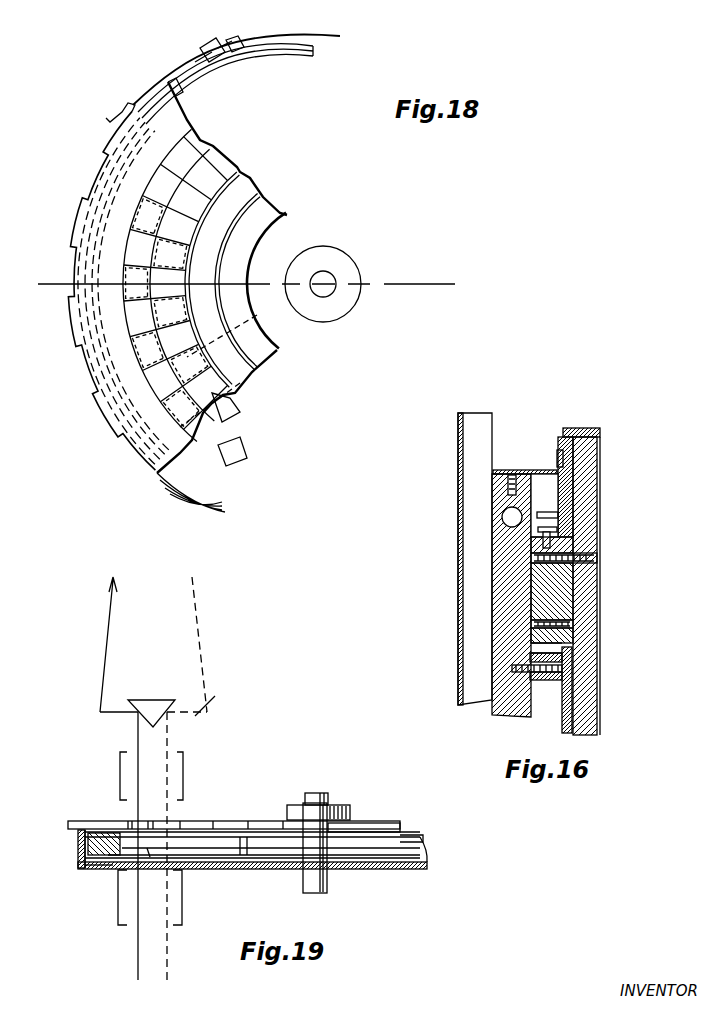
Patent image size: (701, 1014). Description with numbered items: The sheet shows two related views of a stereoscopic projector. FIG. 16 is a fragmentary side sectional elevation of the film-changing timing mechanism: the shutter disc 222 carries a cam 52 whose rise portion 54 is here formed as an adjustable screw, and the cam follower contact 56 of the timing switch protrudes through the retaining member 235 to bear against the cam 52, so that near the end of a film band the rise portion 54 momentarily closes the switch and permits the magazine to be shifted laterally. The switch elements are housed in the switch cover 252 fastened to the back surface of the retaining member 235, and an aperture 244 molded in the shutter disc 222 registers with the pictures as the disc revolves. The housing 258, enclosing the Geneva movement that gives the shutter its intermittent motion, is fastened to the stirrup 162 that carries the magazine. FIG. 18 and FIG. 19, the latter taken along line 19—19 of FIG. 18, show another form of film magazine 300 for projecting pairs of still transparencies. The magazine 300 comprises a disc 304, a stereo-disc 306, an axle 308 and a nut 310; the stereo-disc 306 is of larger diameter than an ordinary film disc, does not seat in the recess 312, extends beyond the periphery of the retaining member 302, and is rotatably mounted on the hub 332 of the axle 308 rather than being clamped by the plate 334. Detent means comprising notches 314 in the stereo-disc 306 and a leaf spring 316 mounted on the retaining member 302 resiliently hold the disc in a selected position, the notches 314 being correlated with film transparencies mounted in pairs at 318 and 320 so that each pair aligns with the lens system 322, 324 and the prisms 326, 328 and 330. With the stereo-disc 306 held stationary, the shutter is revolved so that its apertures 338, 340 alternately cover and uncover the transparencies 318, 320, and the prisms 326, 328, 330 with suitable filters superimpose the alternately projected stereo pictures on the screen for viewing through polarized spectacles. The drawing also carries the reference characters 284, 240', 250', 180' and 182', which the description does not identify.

In FIG. 18, the section line 19 is at (243, 287).
In FIG. 18, the spring band 284 is at (130, 247).
In FIG. 18, the notches 314 is at (100, 418).
In FIG. 18, the leaf spring 316 is at (163, 82).
In FIG. 18, the film transparencies 318 is at (195, 135).
In FIG. 19, the film transparencies 318 is at (122, 818).
In FIG. 18, the film transparencies 320 is at (200, 215).
In FIG. 19, the film transparencies 320 is at (170, 818).
In FIG. 18, the shutter aperture 338 is at (258, 383).
In FIG. 18, the shutter aperture 340 is at (245, 328).
In FIG. 16, the housing 258 is at (475, 413).
In FIG. 16, the stirrup 162 is at (512, 570).
In FIG. 16, the switch cover 252 is at (528, 470).
In FIG. 16, the retaining member 235 is at (588, 428).
In FIG. 16, the shutter disc 222 is at (590, 466).
In FIG. 16, the cam follower contact 56 is at (548, 512).
In FIG. 16, the rise portion 54 is at (555, 528).
In FIG. 16, the cam 52 is at (565, 590).
In FIG. 19, the stereo-disc 306 is at (240, 821).
In FIG. 19, the retaining member 302 is at (80, 840).
In FIG. 19, the disc 304 is at (92, 845).
In FIG. 19, the film magazine 300 is at (420, 870).
In FIG. 19, the plate 334 is at (425, 845).
In FIG. 19, the recess 312 is at (410, 836).
In FIG. 19, the hub 332 is at (345, 823).
In FIG. 19, the axle 308 is at (330, 884).
In FIG. 19, the nut 310 is at (318, 800).
In FIG. 19, the knob 240' is at (348, 793).
In FIG. 19, the element 250' is at (95, 879).
In FIG. 19, the aperture 244 is at (140, 860).
In FIG. 19, the reference line 180' is at (113, 846).
In FIG. 19, the reference line 182' is at (197, 846).
In FIG. 19, the prism 326 is at (155, 702).
In FIG. 19, the prism 330 is at (106, 724).
In FIG. 19, the prism 328 is at (222, 700).
In FIG. 19, the lens system 324 is at (183, 770).
In FIG. 19, the lens system 322 is at (182, 910).